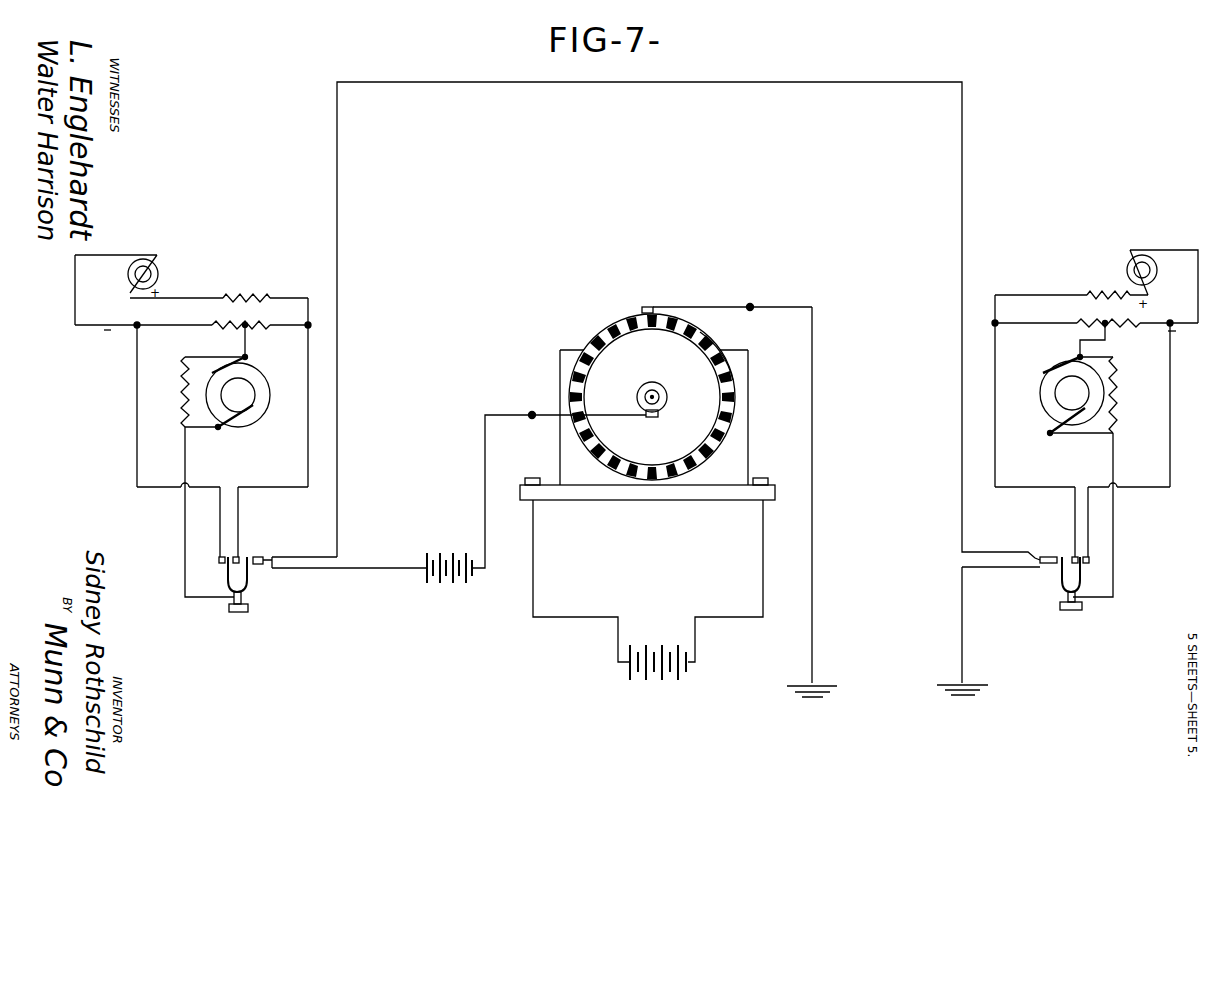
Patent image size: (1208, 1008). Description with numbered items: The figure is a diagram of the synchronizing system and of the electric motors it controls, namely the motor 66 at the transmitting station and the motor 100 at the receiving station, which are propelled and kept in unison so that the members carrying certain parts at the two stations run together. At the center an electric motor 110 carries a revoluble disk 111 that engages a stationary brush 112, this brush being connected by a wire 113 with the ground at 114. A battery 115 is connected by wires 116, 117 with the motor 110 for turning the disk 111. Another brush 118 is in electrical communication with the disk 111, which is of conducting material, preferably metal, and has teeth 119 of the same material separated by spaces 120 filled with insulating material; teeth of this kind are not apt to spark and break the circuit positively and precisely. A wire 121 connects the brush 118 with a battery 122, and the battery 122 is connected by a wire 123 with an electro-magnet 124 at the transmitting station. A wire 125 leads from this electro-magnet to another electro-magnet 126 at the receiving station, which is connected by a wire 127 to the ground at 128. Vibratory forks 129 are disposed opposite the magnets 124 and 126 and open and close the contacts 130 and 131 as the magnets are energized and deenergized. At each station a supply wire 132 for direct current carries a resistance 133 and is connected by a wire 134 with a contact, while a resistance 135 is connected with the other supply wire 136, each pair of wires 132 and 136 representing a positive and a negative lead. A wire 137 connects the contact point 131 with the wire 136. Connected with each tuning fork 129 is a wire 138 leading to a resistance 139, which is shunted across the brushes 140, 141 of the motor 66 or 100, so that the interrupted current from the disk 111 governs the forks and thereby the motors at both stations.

The motor 66 is at (236, 387).
The motor 100 is at (1065, 393).
The electric motor 110 is at (742, 440).
The revoluble disk 111 is at (668, 365).
The stationary brush 112 is at (648, 307).
The wire 113 is at (838, 495).
The ground 114 is at (813, 682).
The battery 115 is at (657, 650).
The wire 116 is at (533, 586).
The wire 117 is at (763, 545).
The brush 118 is at (616, 416).
The teeth 119 is at (705, 343).
The spaces 120 is at (707, 337).
The wire 121 is at (485, 457).
The battery 122 is at (452, 583).
The wire 123 is at (354, 572).
The electro-magnet 124 is at (257, 565).
The wire 125 is at (338, 482).
The electro-magnet 126 is at (1043, 556).
The wire 127 is at (962, 620).
The ground 128 is at (964, 682).
The vibratory fork 129 is at (228, 587).
The contact 130 is at (240, 560).
The contact point 131 is at (220, 558).
The supply wire 132 is at (162, 296).
The resistance 133 is at (238, 298).
The wire 134 is at (310, 381).
The resistance 135 is at (257, 325).
The supply wire 136 is at (74, 327).
The wire 137 is at (137, 405).
The wire 138 is at (183, 522).
The resistance 139 is at (184, 392).
The brush 140 is at (248, 358).
The brush 141 is at (222, 429).